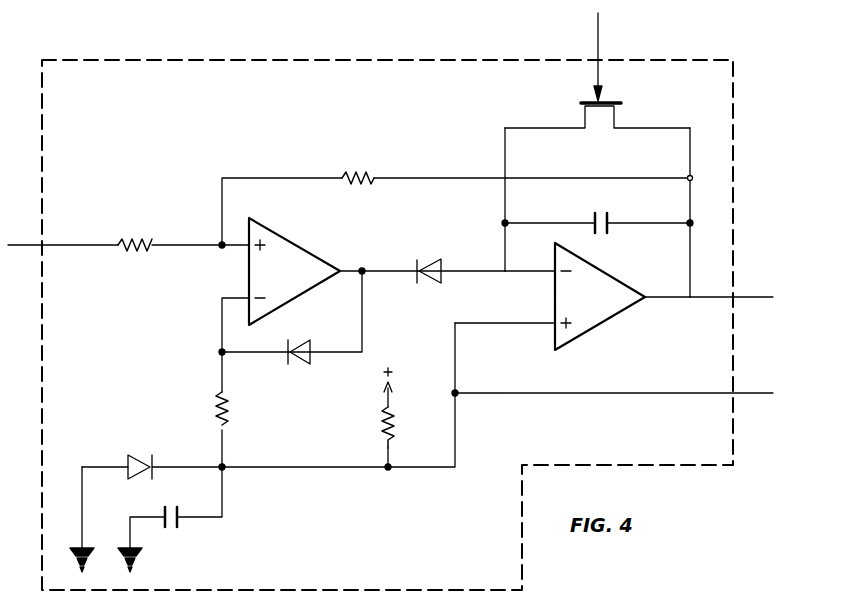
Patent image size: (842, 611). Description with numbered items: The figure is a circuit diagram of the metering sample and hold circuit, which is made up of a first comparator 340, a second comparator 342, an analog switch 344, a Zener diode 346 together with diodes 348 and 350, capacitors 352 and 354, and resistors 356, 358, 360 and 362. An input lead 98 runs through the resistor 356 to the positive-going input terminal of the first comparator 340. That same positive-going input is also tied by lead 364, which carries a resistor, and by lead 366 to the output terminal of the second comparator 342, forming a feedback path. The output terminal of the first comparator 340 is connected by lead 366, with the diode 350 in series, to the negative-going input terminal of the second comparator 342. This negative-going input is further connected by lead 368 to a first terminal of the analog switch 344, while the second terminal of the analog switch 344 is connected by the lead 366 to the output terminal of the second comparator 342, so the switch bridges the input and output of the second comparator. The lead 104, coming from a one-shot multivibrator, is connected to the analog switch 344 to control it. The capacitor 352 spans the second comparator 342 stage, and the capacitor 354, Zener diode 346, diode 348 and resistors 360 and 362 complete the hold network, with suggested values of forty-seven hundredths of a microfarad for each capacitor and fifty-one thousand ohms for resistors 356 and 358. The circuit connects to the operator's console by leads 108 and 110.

The lead 98 is at (72, 245).
The lead 104 is at (598, 38).
The lead 108 is at (753, 297).
The lead 110 is at (756, 393).
The first comparator 340 is at (280, 240).
The second comparator 342 is at (606, 318).
The analog switch 344 is at (568, 102).
The Zener diode 346 is at (136, 456).
The diode 348 is at (303, 364).
The diode 350 is at (430, 284).
The capacitor 352 is at (594, 221).
The capacitor 354 is at (180, 528).
The resistor 356 is at (142, 243).
The resistor 358 is at (366, 172).
The resistor 360 is at (394, 430).
The resistor 362 is at (216, 398).
The lead 364 is at (261, 178).
The lead 366 is at (383, 268).
The lead 368 is at (506, 152).